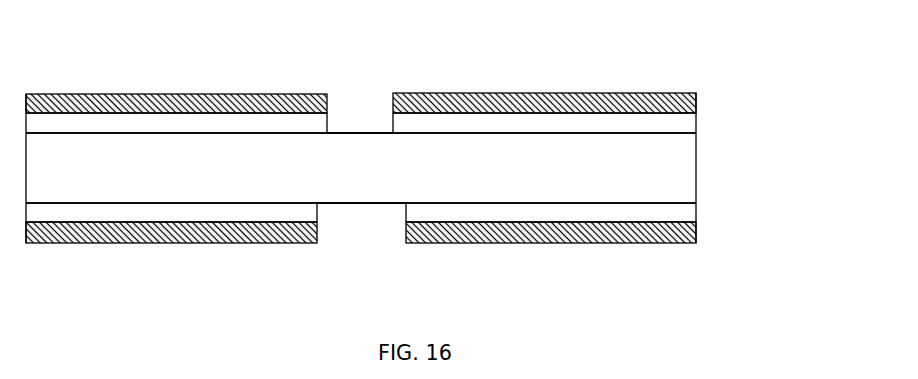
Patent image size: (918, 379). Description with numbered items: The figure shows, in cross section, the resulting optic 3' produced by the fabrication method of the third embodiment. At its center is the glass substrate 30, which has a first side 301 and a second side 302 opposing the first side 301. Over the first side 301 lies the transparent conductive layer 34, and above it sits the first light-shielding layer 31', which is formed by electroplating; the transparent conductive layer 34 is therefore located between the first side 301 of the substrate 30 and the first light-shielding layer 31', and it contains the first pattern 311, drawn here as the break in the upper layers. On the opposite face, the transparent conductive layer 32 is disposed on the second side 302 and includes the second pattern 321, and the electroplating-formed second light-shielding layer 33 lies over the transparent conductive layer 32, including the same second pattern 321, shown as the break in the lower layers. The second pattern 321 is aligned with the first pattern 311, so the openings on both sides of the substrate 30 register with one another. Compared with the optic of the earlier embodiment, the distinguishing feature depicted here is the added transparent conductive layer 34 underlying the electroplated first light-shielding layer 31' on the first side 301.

The optic 3' is at (400, 162).
The glass substrate 30 is at (677, 152).
The first side 301 is at (676, 124).
The second side 302 is at (686, 210).
The first light-shielding layer 31' is at (361, 84).
The transparent conductive layer 34 is at (480, 125).
The transparent conductive layer 32 is at (612, 211).
The second light-shielding layer 33 is at (679, 243).
The first pattern 311 is at (362, 108).
The second pattern 321 is at (351, 216).